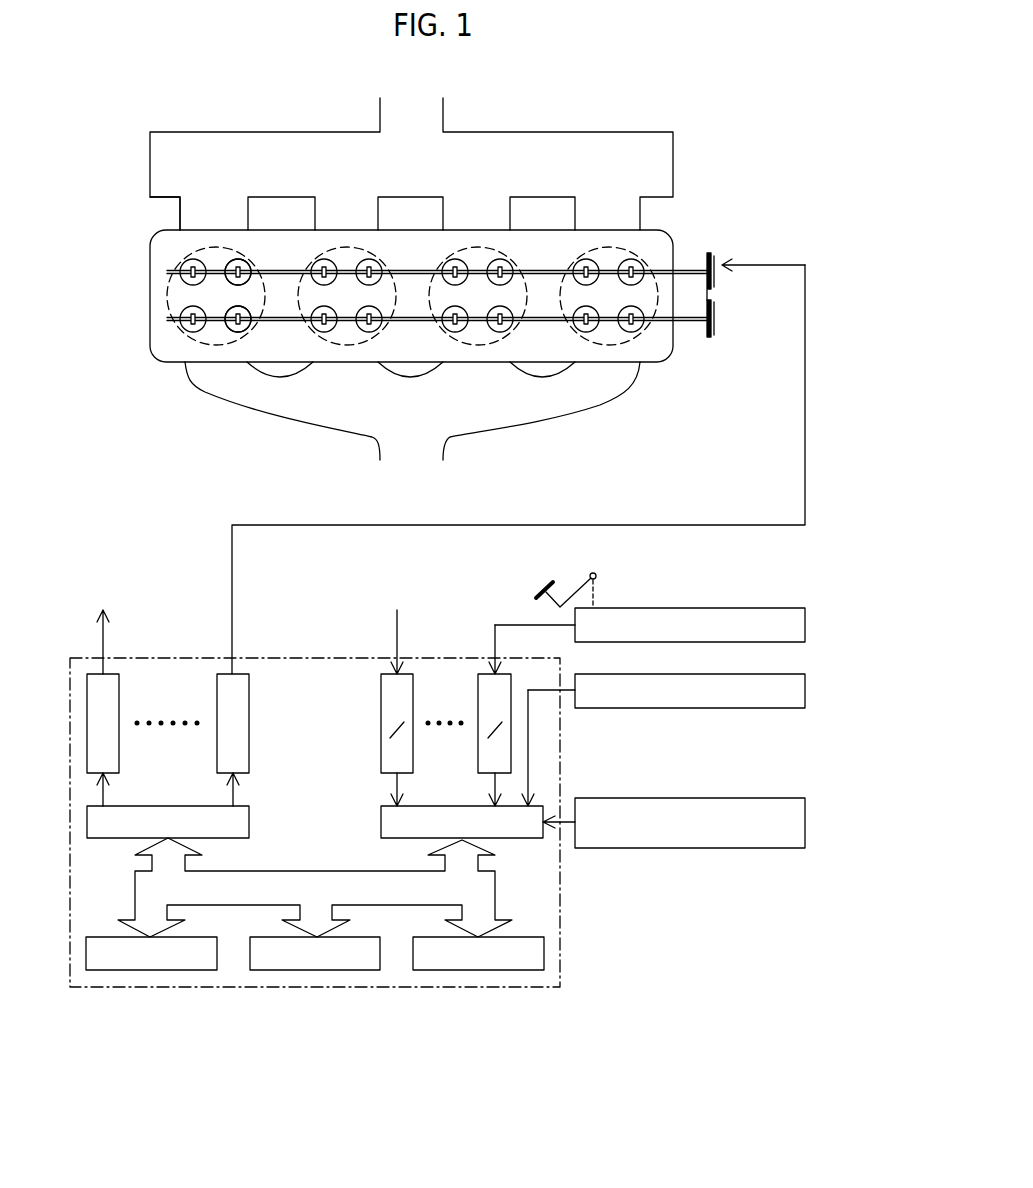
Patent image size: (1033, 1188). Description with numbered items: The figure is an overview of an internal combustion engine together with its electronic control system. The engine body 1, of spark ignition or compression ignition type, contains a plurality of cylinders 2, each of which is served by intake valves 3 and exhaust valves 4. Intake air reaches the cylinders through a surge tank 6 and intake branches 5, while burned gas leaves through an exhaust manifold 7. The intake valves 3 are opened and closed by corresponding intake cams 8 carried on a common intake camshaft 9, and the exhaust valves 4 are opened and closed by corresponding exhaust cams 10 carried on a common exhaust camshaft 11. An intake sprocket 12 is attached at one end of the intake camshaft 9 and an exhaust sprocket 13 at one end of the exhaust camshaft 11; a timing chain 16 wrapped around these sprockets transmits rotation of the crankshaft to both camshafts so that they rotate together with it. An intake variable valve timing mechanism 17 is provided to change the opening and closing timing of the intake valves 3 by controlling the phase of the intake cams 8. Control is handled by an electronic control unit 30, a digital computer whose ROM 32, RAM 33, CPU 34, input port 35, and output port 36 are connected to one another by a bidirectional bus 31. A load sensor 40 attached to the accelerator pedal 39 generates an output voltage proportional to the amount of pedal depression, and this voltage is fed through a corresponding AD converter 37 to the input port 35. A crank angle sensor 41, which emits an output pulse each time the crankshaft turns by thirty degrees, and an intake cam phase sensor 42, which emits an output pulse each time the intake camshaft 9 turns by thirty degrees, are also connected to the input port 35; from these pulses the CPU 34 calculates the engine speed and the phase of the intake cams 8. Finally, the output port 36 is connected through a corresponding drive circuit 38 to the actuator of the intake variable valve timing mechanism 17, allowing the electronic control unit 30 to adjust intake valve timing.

The engine body 1 is at (150, 342).
The cylinders 2 is at (612, 345).
The intake valves 3 is at (238, 258).
The exhaust valves 4 is at (238, 333).
The intake branches 5 is at (182, 218).
The surge tank 6 is at (493, 132).
The exhaust manifold 7 is at (500, 424).
The intake cams 8 is at (193, 258).
The intake camshaft 9 is at (707, 378).
The exhaust cams 10 is at (193, 333).
The exhaust camshaft 11 is at (445, 362).
The intake sprocket 12 is at (713, 256).
The exhaust sprocket 13 is at (714, 337).
The timing chain 16 is at (712, 300).
The intake variable valve timing mechanism 17 is at (716, 268).
The electronic control unit 30 is at (301, 657).
The bidirectional bus 31 is at (495, 892).
The ROM 32 is at (200, 972).
The RAM 33 is at (363, 972).
The CPU 34 is at (528, 972).
The input port 35 is at (381, 820).
The output port 36 is at (250, 820).
The AD converter 37 is at (413, 688).
The drive circuit 38 is at (119, 688).
The accelerator pedal 39 is at (578, 580).
The load sensor 40 is at (740, 607).
The crank angle sensor 41 is at (740, 674).
The intake cam phase sensor 42 is at (740, 797).